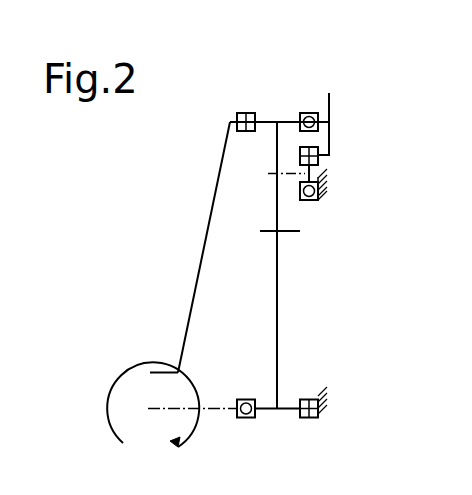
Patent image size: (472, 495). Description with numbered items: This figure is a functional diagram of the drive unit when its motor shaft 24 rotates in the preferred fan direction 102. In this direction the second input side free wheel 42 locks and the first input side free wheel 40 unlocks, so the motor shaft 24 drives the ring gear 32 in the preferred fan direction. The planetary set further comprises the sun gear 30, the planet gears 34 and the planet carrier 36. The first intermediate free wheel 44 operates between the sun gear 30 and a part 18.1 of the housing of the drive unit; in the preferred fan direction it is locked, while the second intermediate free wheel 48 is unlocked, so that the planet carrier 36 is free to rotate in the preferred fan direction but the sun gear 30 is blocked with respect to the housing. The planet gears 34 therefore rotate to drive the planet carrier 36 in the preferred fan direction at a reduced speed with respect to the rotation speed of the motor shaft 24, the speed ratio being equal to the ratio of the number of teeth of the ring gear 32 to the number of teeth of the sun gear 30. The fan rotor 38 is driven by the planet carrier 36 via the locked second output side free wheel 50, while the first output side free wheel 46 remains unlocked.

The part of the housing 18.1 is at (320, 403).
The motor shaft 24 is at (208, 410).
The sun gear 30 is at (278, 280).
The ring gear 32 is at (271, 121).
The planet gears 34 is at (278, 217).
The planet carrier 36 is at (275, 173).
The fan rotor 38 is at (331, 103).
The first input side free wheel 40 is at (252, 418).
The second input side free wheel 42 is at (243, 112).
The first intermediate free wheel 44 is at (305, 418).
The first output side free wheel 46 is at (313, 112).
The second intermediate free wheel 48 is at (313, 202).
The second output side free wheel 50 is at (318, 163).
The preferred fan direction 102 is at (132, 366).